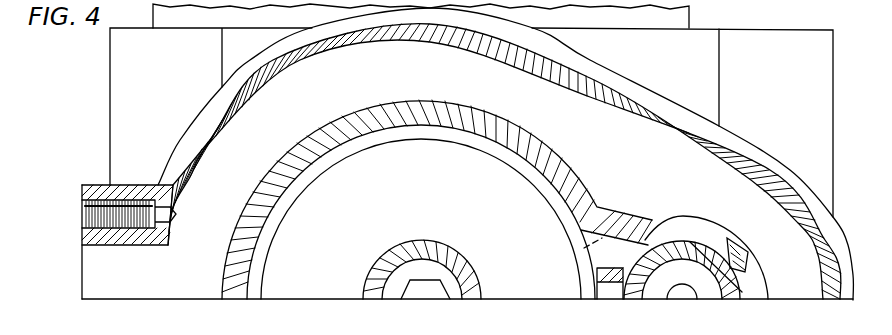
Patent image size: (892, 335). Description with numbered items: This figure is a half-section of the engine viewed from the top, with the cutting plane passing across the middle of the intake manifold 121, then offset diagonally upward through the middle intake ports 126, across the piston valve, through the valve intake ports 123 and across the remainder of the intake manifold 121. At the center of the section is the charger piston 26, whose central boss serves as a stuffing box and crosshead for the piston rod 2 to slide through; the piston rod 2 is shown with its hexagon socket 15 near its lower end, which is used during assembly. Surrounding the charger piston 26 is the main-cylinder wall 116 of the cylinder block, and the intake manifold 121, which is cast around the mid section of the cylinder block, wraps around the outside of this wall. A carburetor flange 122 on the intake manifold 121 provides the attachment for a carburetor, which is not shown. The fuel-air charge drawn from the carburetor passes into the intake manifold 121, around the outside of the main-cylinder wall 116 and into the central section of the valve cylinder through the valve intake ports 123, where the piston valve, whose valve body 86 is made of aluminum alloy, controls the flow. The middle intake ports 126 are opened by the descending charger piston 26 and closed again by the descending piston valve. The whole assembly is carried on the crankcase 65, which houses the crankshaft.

The crankcase 65 is at (730, 29).
The intake manifold 121 is at (148, 290).
The carburetor flange 122 is at (82, 190).
The main-cylinder wall 116 is at (283, 195).
The middle intake ports 126 is at (592, 250).
The charger piston 26 is at (432, 199).
The piston rod 2 is at (440, 242).
The hexagon socket 15 is at (425, 291).
The valve intake ports 123 is at (727, 228).
The valve body 86 is at (664, 266).